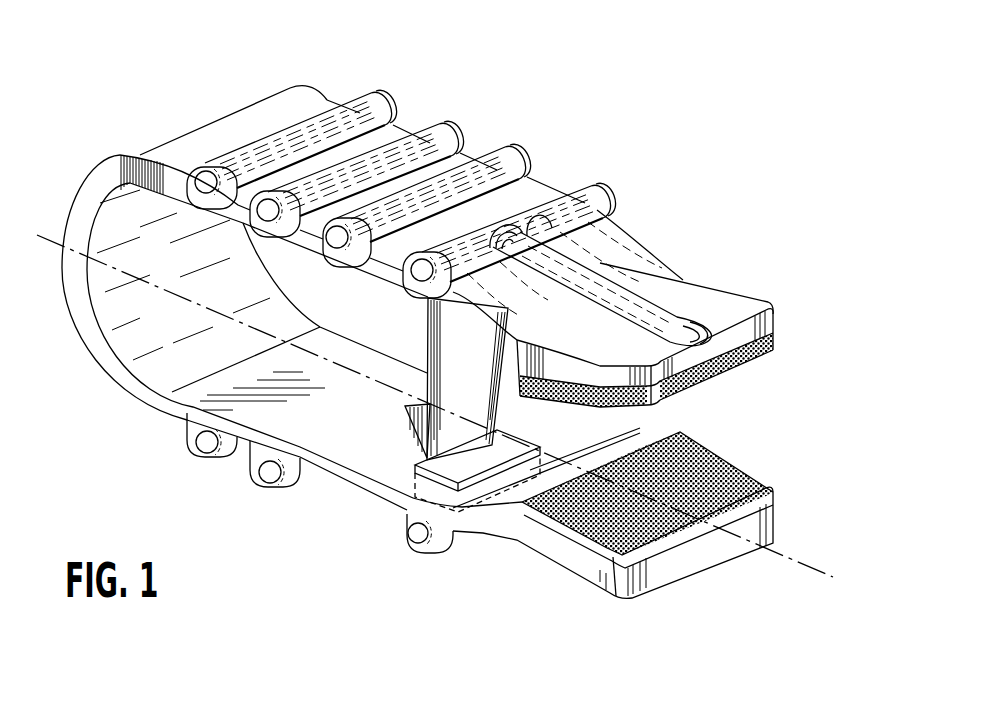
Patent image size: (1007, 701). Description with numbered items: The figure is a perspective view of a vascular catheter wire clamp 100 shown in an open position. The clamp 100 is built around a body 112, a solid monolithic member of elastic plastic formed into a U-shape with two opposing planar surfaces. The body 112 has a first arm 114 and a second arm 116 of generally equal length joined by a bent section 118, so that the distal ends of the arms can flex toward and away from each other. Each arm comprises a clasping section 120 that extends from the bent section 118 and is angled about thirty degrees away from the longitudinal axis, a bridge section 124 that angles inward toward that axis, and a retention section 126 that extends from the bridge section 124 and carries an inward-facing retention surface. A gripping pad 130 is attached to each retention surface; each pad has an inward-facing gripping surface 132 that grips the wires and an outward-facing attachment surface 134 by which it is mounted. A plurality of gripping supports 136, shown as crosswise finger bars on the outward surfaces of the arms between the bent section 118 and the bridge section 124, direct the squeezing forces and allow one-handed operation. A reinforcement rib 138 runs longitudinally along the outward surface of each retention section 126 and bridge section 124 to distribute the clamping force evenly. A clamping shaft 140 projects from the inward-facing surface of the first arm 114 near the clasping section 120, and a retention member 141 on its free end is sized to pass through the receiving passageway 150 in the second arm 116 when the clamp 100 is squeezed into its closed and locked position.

The vascular catheter wire clamp 100 is at (605, 148).
The body 112 is at (327, 97).
The first arm 114 is at (677, 426).
The second arm 116 is at (472, 425).
The bent section 118 is at (75, 193).
The clasping section 120 is at (467, 150).
The bridge section 124 is at (630, 230).
The retention section 126 is at (773, 303).
The gripping pad 130 is at (760, 357).
The gripping surface 132 is at (720, 367).
The attachment surface 134 is at (670, 490).
The gripping supports 136 is at (440, 122).
The reinforcement rib 138 is at (640, 303).
The clamping shaft 140 is at (452, 391).
The retention member 141 is at (403, 417).
The receiving passageway 150 is at (427, 507).